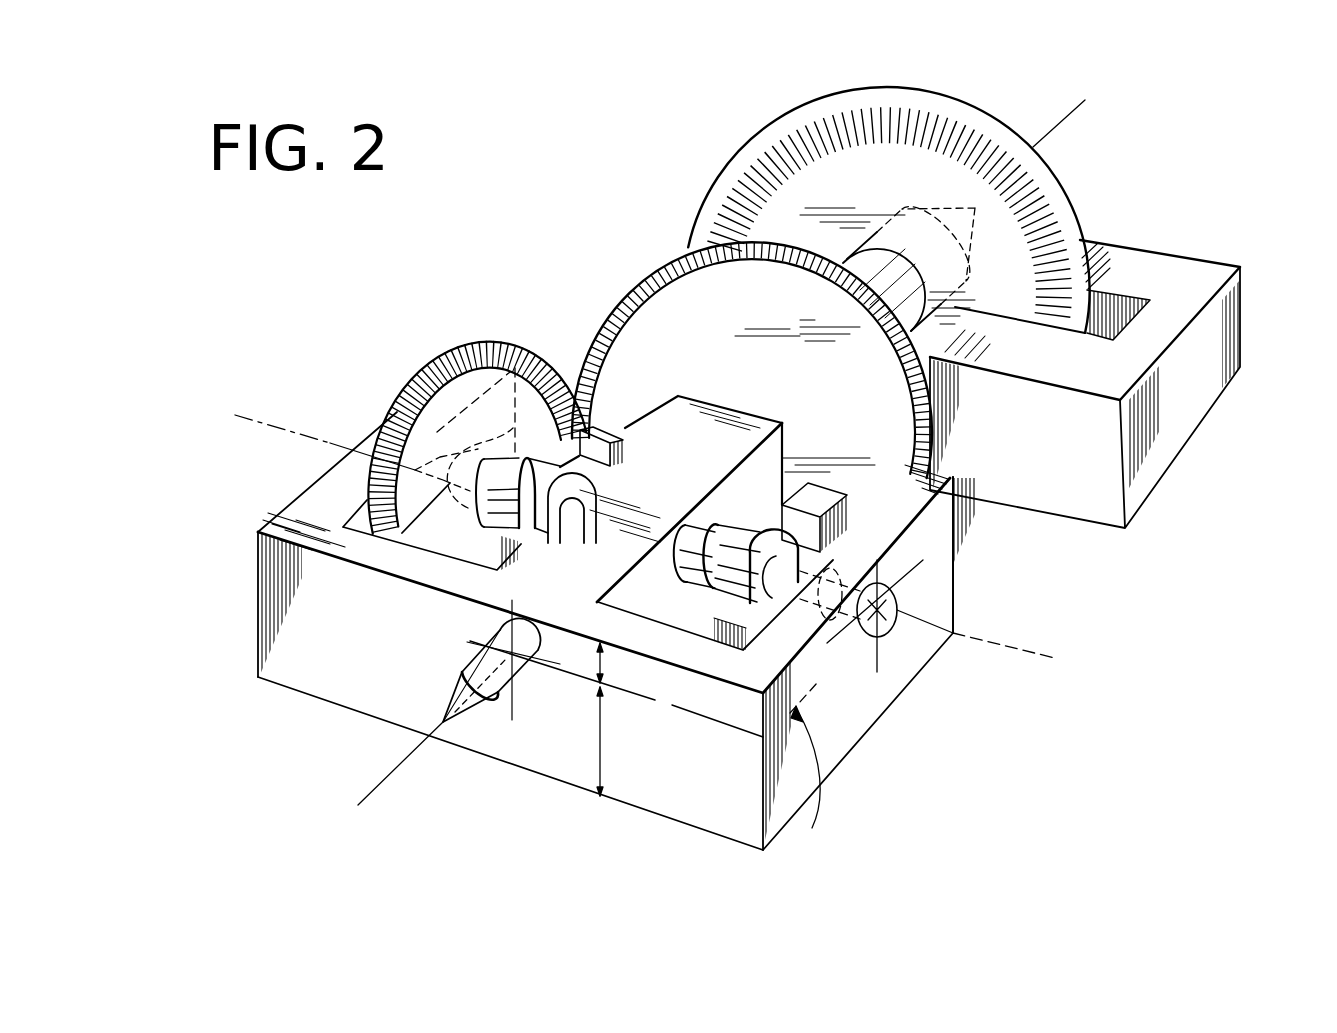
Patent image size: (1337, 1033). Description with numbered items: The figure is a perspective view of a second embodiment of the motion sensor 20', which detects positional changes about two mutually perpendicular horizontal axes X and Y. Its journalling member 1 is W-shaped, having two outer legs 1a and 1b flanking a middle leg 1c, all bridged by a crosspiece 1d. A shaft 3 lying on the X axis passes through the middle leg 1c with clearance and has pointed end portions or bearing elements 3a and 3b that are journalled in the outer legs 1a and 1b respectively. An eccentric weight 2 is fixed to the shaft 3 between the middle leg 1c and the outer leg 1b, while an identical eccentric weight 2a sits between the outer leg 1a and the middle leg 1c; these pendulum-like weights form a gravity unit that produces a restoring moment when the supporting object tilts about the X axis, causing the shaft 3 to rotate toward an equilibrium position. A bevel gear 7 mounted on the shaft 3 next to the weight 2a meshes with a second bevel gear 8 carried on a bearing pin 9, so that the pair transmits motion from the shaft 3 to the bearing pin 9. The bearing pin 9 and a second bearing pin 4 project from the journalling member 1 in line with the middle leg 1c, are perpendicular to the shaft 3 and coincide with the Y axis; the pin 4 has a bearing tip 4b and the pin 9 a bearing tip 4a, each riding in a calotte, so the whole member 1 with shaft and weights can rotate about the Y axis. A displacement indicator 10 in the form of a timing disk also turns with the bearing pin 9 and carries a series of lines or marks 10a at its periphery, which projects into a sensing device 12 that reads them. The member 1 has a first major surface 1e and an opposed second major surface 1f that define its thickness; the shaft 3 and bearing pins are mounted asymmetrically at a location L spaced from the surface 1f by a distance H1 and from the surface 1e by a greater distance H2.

The journalling member 1 is at (737, 800).
The outer leg 1a is at (285, 512).
The outer leg 1b is at (945, 548).
The middle leg 1c is at (660, 432).
The crosspiece 1d is at (413, 570).
The first major surface 1e is at (543, 773).
The second major surface 1f is at (602, 566).
The eccentric weight 2 is at (823, 507).
The eccentric weight 2a is at (583, 452).
The shaft 3 is at (492, 442).
The pointed end portion 3a is at (408, 411).
The pointed end portion 3b is at (900, 588).
The bearing pin 4 is at (518, 668).
The bearing tip 4a is at (950, 198).
The bearing tip 4b is at (470, 697).
The bevel gear 7 is at (483, 358).
The second bevel gear 8 is at (637, 292).
The bearing pin 9 is at (960, 263).
The displacement indicator 10 is at (920, 95).
The marks 10a is at (757, 160).
The sensing device 12 is at (1220, 334).
The motion sensor 20' is at (647, 151).
The distance H1 is at (624, 665).
The distance H2 is at (622, 741).
The location L is at (805, 784).
The X-axis X is at (647, 536).
The Y-axis Y is at (720, 457).